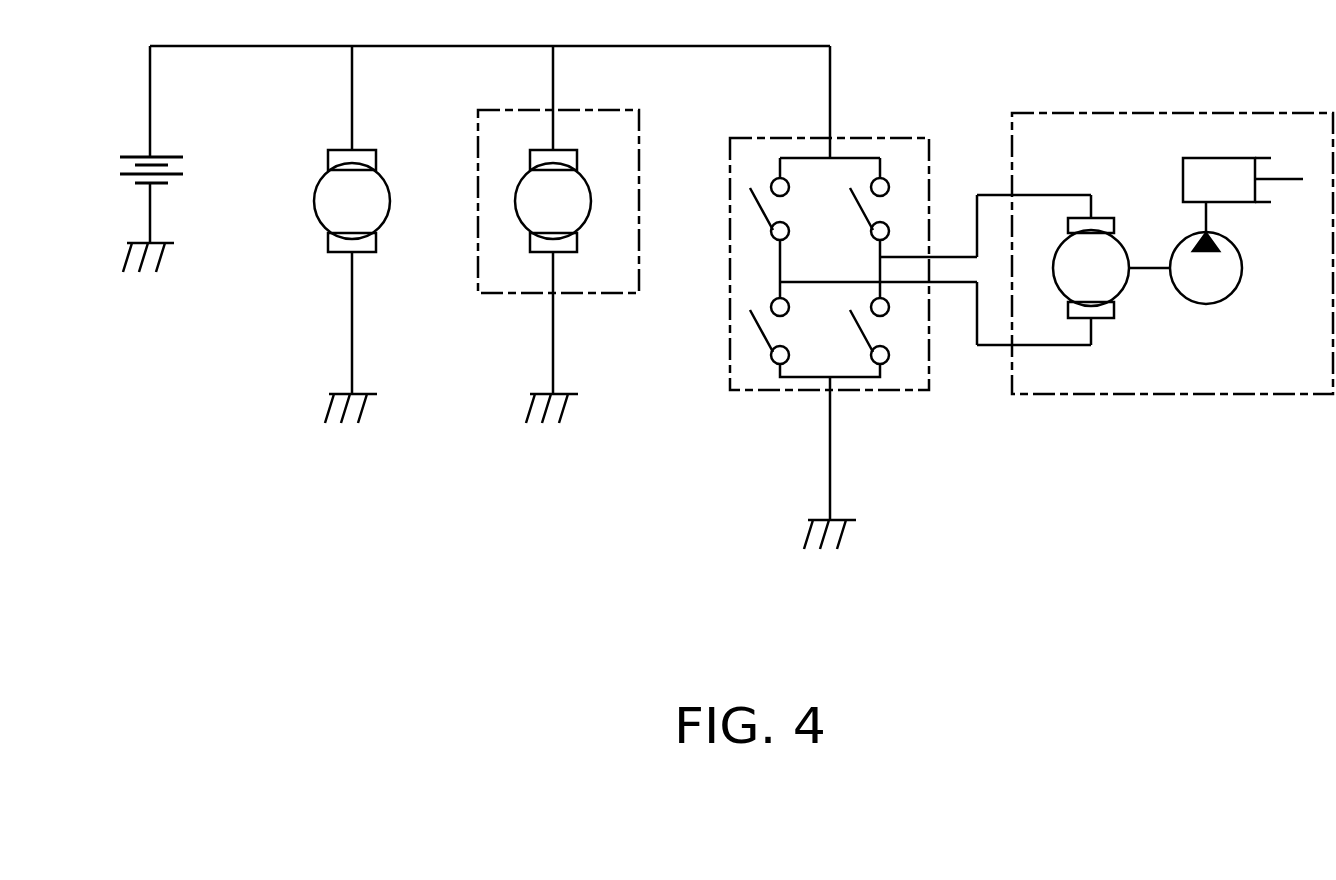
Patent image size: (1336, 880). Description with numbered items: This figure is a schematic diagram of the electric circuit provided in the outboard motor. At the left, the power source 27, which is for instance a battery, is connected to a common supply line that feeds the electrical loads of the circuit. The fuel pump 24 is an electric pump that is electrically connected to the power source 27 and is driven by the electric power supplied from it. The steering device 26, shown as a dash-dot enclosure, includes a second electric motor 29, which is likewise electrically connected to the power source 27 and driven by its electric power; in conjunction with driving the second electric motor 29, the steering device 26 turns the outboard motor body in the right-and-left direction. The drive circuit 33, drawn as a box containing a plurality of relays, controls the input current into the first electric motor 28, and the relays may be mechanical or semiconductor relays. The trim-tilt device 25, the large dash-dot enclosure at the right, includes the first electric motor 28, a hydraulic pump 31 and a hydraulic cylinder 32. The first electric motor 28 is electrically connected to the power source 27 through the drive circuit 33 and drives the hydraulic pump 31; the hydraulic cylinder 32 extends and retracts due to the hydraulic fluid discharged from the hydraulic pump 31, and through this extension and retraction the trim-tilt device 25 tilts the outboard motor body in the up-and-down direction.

The fuel pump 24 is at (314, 197).
The trim-tilt device 25 is at (1083, 396).
The steering device 26 is at (493, 296).
The power source 27 is at (137, 152).
The first electric motor 28 is at (1105, 323).
The second electric motor 29 is at (515, 200).
The hydraulic pump 31 is at (1228, 302).
The hydraulic cylinder 32 is at (1181, 180).
The drive circuit 33 is at (748, 392).